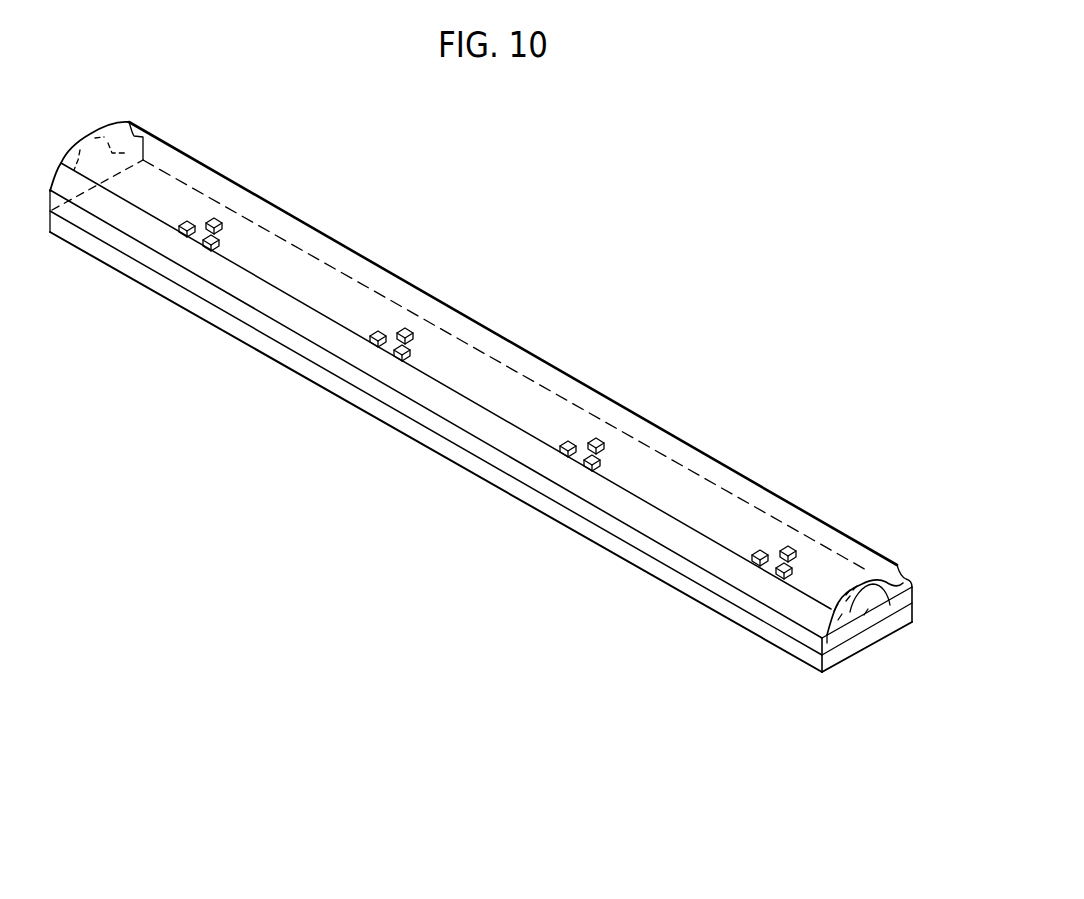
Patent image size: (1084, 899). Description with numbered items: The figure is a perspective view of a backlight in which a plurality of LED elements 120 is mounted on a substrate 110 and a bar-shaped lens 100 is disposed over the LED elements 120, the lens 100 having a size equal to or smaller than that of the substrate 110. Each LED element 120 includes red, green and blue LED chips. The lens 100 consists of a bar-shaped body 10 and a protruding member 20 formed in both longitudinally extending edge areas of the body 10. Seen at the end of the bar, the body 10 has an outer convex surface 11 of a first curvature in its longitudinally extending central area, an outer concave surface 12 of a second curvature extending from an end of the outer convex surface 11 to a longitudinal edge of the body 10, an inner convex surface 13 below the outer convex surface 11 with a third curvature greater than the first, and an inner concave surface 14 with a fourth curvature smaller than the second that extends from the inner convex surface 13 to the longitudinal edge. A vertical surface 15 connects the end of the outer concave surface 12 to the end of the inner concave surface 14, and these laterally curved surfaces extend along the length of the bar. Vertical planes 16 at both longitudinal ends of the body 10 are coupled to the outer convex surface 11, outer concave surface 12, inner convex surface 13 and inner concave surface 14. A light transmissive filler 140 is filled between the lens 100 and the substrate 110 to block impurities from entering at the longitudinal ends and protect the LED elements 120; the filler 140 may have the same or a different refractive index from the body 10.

The bar-shaped lens 100 is at (491, 459).
The bar-shaped body 10 is at (486, 442).
The protruding member 20 is at (912, 590).
The outer convex surface 11 is at (855, 588).
The outer concave surface 12 is at (848, 598).
The inner convex surface 13 is at (848, 592).
The inner concave surface 14 is at (857, 667).
The vertical surface 15 is at (836, 607).
The vertical plane 16 is at (866, 612).
The substrate 110 is at (910, 582).
The LED element 120 is at (749, 548).
The light transmissive filler 140 is at (886, 577).